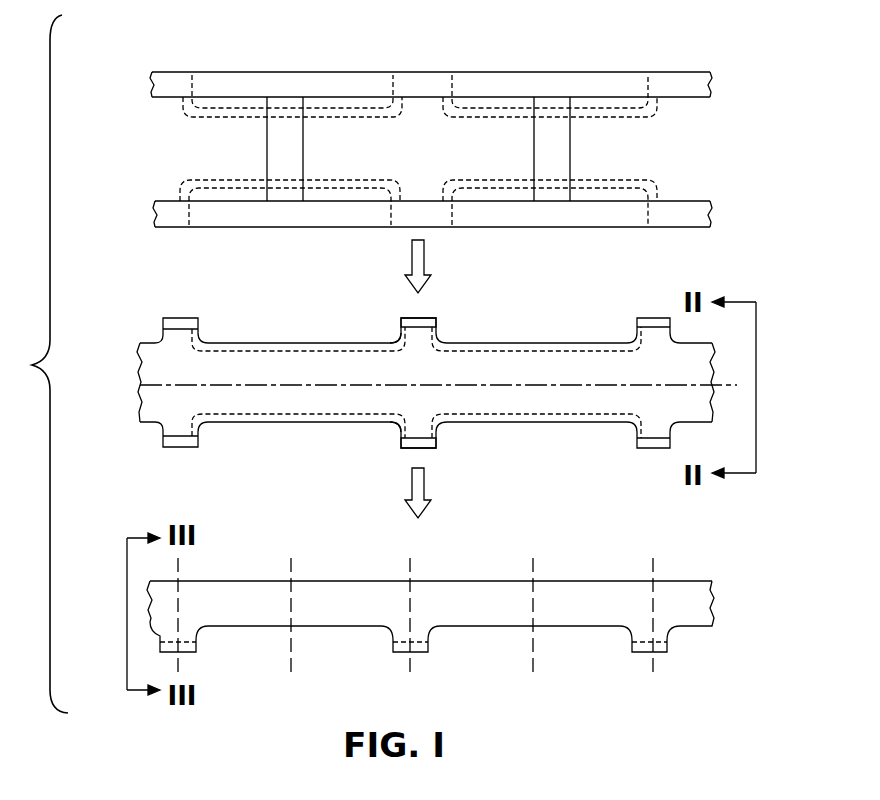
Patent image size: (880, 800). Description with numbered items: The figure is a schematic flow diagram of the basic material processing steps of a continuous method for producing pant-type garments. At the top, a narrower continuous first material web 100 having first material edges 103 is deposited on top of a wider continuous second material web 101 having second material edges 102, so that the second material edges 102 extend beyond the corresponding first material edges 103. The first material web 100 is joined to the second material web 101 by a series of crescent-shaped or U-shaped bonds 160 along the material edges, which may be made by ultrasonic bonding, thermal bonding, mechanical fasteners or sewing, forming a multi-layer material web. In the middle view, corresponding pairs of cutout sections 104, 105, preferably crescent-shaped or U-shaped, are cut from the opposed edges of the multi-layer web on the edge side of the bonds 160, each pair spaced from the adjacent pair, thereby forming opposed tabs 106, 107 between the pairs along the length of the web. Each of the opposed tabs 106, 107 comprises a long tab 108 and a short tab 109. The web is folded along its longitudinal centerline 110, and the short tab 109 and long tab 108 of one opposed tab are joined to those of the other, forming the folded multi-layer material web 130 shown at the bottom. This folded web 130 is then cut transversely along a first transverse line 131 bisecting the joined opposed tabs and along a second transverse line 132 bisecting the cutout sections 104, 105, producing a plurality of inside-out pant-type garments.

The first material web 100 is at (420, 246).
The second material web 101 is at (600, 72).
The second material edges 102 is at (465, 72).
The first material edges 103 is at (413, 97).
The cutout section 104 is at (337, 108).
The cutout section 105 is at (327, 188).
The opposed tab 106 is at (428, 318).
The opposed tab 107 is at (425, 448).
The long tab 108 is at (437, 326).
The short tab 109 is at (393, 341).
The longitudinal centerline 110 is at (406, 383).
The folded multi-layer material web 130 is at (435, 638).
The first transverse line 131 is at (428, 642).
The second transverse line 132 is at (291, 620).
The bonds 160 is at (178, 180).